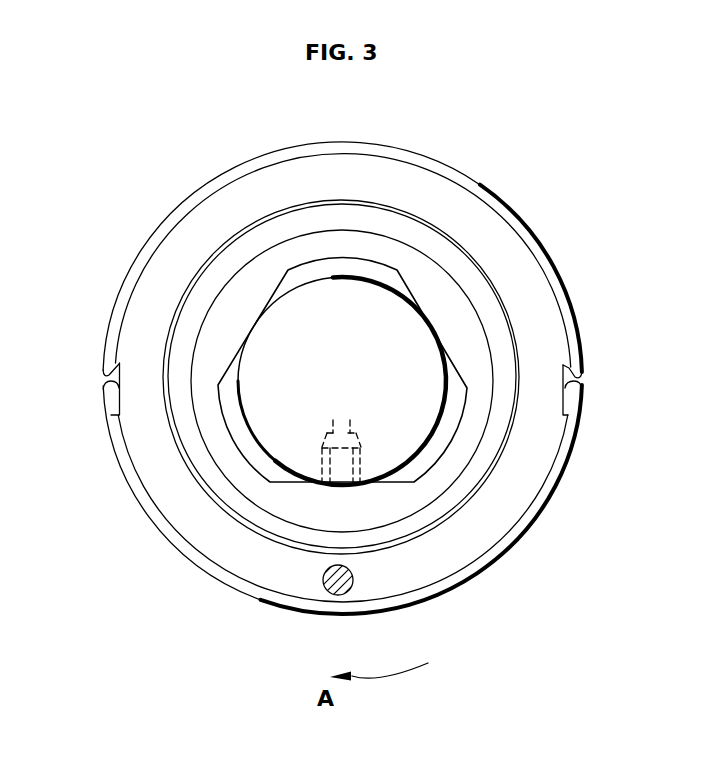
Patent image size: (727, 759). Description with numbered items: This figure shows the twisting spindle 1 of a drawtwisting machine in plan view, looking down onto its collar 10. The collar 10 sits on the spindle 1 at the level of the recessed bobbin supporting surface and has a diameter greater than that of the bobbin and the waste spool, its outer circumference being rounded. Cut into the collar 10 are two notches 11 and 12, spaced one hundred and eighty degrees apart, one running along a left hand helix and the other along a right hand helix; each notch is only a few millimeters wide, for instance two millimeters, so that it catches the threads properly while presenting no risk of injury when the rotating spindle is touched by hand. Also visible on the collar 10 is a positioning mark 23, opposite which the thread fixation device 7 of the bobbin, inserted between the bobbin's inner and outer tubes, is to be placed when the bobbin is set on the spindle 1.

The twisting spindle 1 is at (335, 367).
The thread fixation device 7 is at (357, 462).
The collar 10 is at (146, 560).
The notch 11 is at (571, 397).
The notch 12 is at (109, 393).
The positioning mark 23 is at (330, 590).